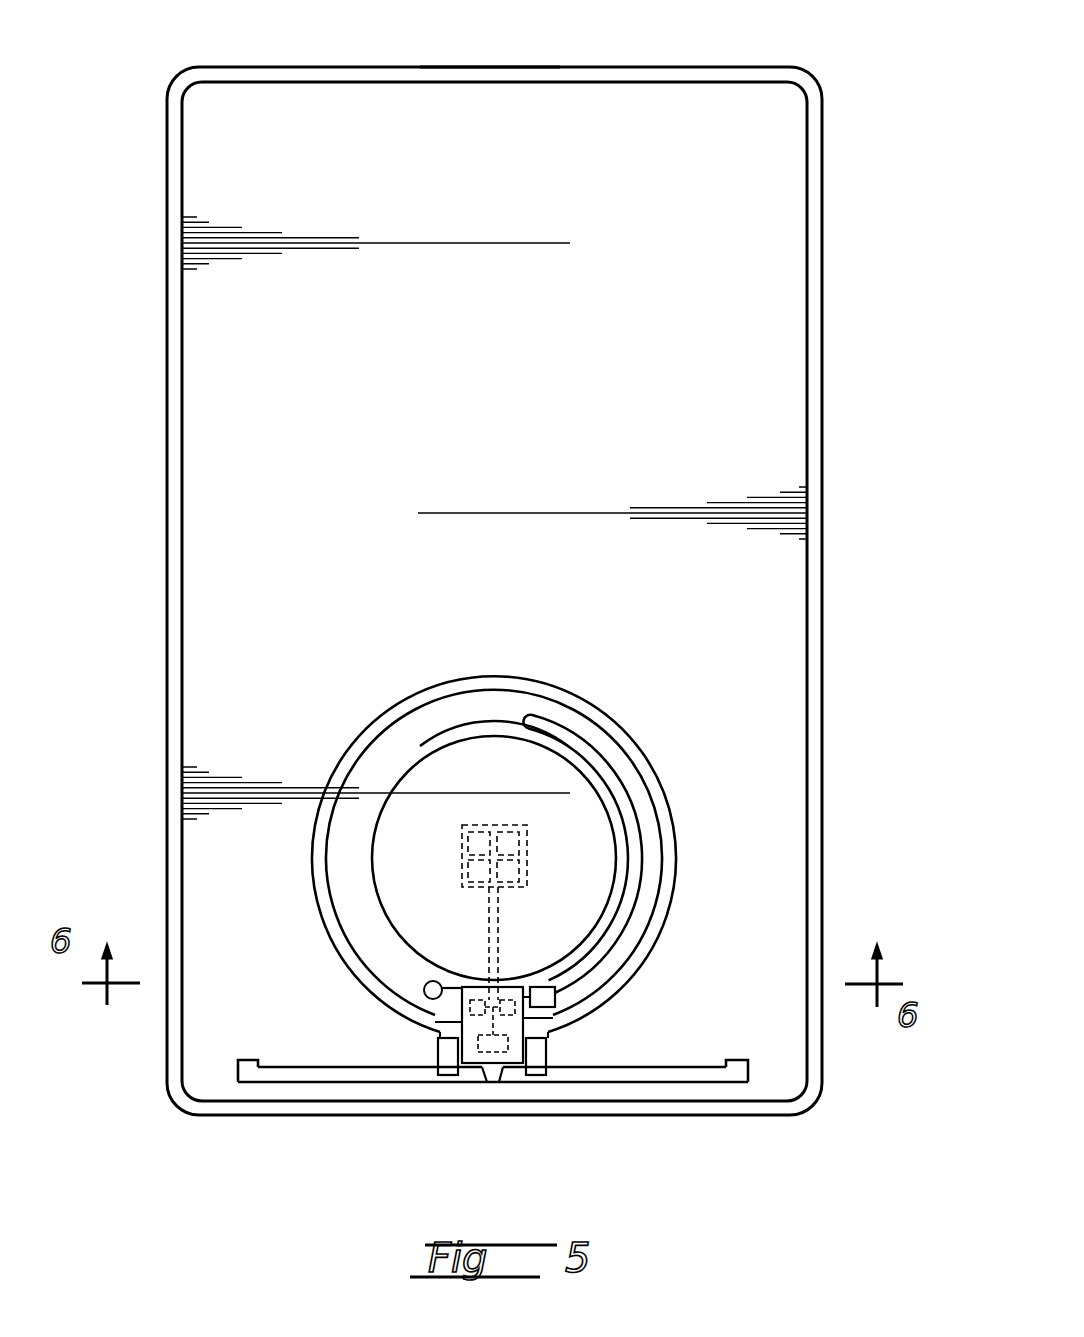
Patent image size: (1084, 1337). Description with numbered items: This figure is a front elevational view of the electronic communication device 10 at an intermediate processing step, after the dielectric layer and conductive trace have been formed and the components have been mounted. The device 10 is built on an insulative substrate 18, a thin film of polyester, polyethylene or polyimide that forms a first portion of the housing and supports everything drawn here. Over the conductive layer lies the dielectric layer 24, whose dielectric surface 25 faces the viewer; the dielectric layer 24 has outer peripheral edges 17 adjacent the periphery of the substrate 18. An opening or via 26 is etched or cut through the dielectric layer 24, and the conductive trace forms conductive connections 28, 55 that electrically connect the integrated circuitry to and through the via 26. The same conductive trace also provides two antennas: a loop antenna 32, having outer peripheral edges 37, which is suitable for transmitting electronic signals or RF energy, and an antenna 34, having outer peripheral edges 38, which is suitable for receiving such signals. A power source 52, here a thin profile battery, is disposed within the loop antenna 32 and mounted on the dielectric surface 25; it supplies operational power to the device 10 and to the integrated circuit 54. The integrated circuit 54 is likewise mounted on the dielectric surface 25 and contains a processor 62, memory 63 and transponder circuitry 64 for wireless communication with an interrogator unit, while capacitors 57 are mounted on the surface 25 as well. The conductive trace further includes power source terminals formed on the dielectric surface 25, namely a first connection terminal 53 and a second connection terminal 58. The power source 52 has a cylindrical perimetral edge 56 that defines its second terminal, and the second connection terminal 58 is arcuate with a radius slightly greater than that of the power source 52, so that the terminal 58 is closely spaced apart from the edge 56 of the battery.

The electronic communication device 10 is at (872, 140).
The outer peripheral edges 17 is at (398, 70).
The substrate 18 is at (478, 68).
The dielectric layer 24 is at (812, 290).
The dielectric surface 25 is at (480, 370).
The via 26 is at (433, 981).
The conductive connection 28 is at (445, 1024).
The loop antenna 32 is at (622, 716).
The antenna 34 is at (318, 1085).
The outer peripheral edges 37 is at (368, 722).
The outer peripheral edges 38 is at (273, 1082).
The power source 52 is at (455, 733).
The first connection terminal 53 is at (528, 852).
The integrated circuit 54 is at (493, 1084).
The conductive connection 55 is at (424, 991).
The perimetral edge 56 is at (372, 900).
The capacitors 57 is at (543, 986).
The second connection terminal 58 is at (625, 782).
The processor 62 is at (480, 1000).
The memory 63 is at (506, 1000).
The transponder circuitry 64 is at (508, 1050).